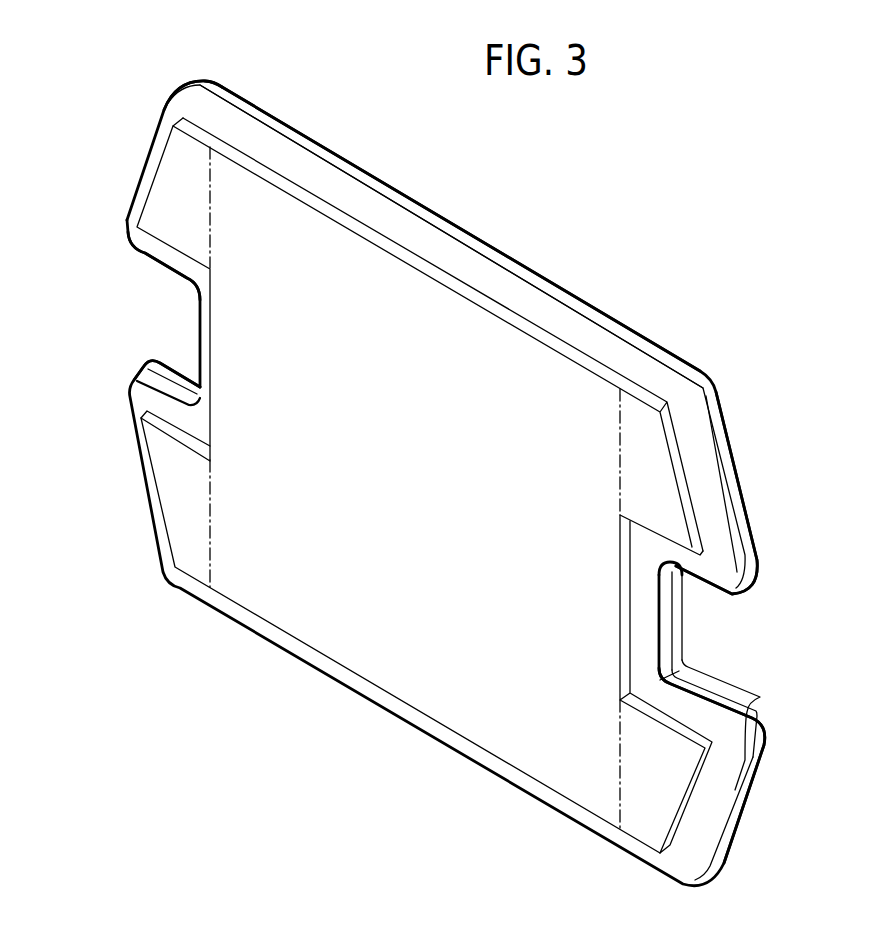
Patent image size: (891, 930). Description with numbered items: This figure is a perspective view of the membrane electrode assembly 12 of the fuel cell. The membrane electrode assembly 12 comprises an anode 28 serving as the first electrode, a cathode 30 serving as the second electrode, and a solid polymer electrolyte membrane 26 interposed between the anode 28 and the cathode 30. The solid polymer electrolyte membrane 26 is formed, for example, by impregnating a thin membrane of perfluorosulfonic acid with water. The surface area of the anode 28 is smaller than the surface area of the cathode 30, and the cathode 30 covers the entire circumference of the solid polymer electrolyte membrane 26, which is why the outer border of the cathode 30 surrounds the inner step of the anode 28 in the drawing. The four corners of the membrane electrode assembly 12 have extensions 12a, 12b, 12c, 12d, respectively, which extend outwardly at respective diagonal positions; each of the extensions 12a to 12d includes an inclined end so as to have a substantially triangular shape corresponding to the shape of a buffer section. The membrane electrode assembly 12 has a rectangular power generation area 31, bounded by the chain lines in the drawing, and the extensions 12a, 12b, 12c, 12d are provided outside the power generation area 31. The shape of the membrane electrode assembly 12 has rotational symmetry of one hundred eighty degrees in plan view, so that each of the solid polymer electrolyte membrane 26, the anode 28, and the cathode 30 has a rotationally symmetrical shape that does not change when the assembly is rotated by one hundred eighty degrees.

The membrane electrode assembly 12 is at (722, 158).
The extension 12a is at (118, 222).
The extension 12b is at (762, 721).
The extension 12c is at (768, 553).
The extension 12d is at (143, 398).
The solid polymer electrolyte membrane 26 is at (171, 108).
The anode 28 is at (182, 162).
The cathode 30 is at (226, 88).
The power generation area 31 is at (231, 511).